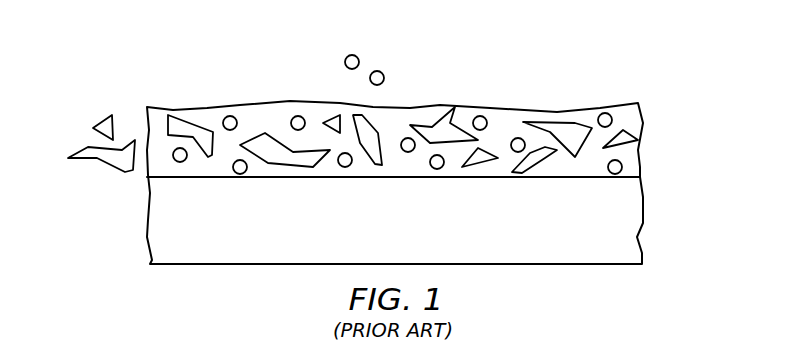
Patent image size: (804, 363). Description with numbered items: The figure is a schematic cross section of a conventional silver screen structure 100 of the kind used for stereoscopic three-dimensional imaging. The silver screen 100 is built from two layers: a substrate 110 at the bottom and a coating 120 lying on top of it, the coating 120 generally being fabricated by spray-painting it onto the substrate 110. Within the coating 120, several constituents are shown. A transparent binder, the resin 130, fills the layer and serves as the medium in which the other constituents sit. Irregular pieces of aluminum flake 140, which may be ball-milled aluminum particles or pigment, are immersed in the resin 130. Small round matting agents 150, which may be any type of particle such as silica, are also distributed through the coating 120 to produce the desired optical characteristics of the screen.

The silver screen structure 100 is at (712, 97).
The substrate 110 is at (148, 220).
The coating 120 is at (654, 97).
The resin 130 is at (205, 118).
The aluminum flake 140 is at (78, 152).
The matting agents 150 is at (383, 73).